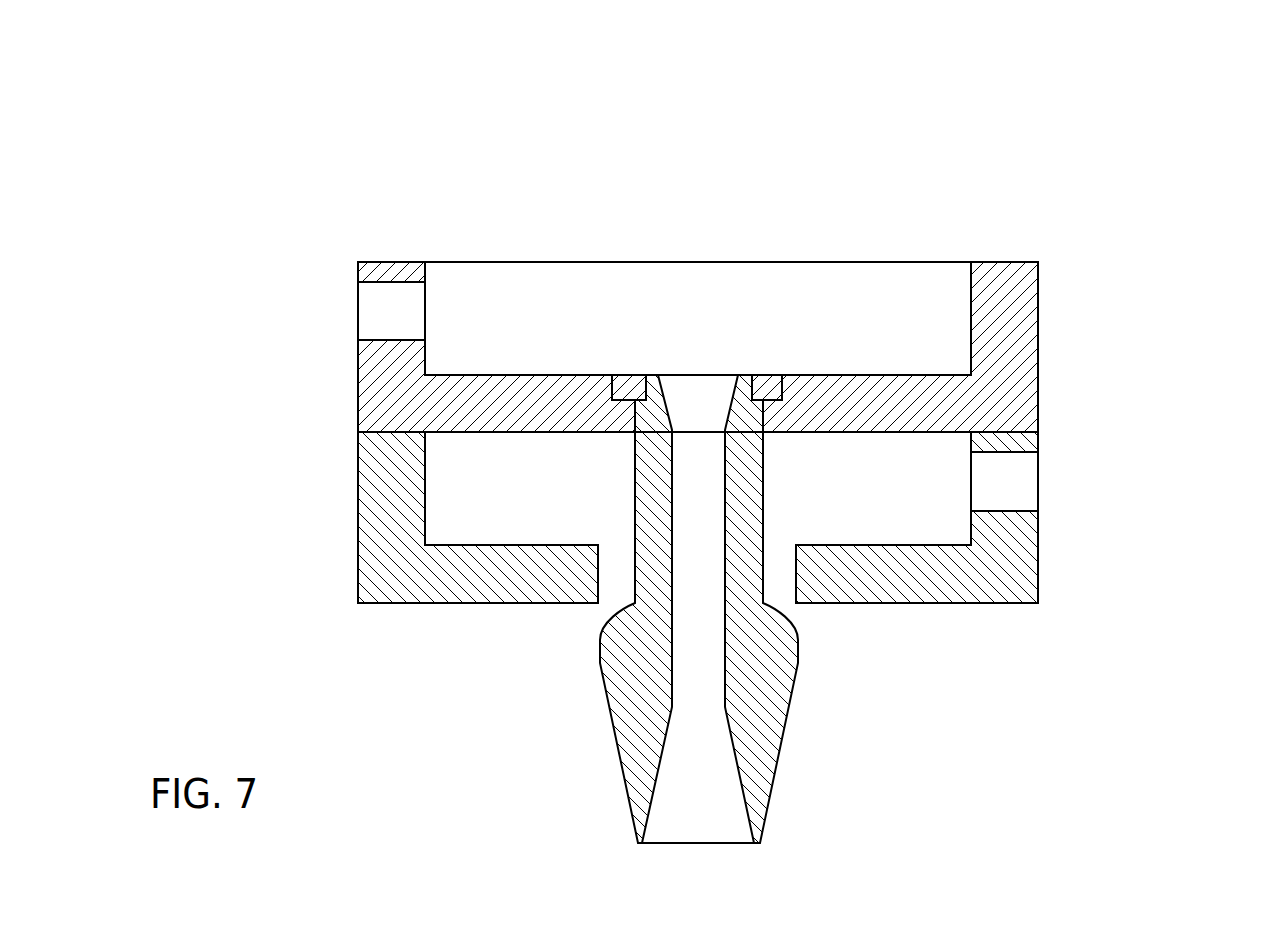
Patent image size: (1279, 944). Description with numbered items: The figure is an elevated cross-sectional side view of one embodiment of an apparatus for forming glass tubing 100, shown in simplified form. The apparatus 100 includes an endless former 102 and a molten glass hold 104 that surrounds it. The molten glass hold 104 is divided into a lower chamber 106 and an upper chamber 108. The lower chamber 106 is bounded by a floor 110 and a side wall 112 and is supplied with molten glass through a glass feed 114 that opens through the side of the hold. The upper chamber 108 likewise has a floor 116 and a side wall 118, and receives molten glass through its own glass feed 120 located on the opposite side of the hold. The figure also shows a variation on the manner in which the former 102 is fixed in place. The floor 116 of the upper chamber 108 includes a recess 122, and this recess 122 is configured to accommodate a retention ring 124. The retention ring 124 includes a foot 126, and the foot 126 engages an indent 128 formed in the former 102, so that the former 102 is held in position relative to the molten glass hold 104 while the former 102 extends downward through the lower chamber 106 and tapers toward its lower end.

The apparatus for forming glass tubing 100 is at (1020, 165).
The endless former 102 is at (847, 758).
The molten glass hold 104 is at (1078, 347).
The lower chamber 106 is at (900, 527).
The upper chamber 108 is at (515, 282).
The floor 110 is at (487, 548).
The side wall 112 is at (428, 485).
The glass feed 114 is at (1020, 484).
The floor 116 is at (845, 375).
The side wall 118 is at (970, 283).
The glass feed 120 is at (365, 307).
The recess 122 is at (613, 397).
The retention ring 124 is at (617, 377).
The foot 126 is at (645, 385).
The indent 128 is at (668, 378).